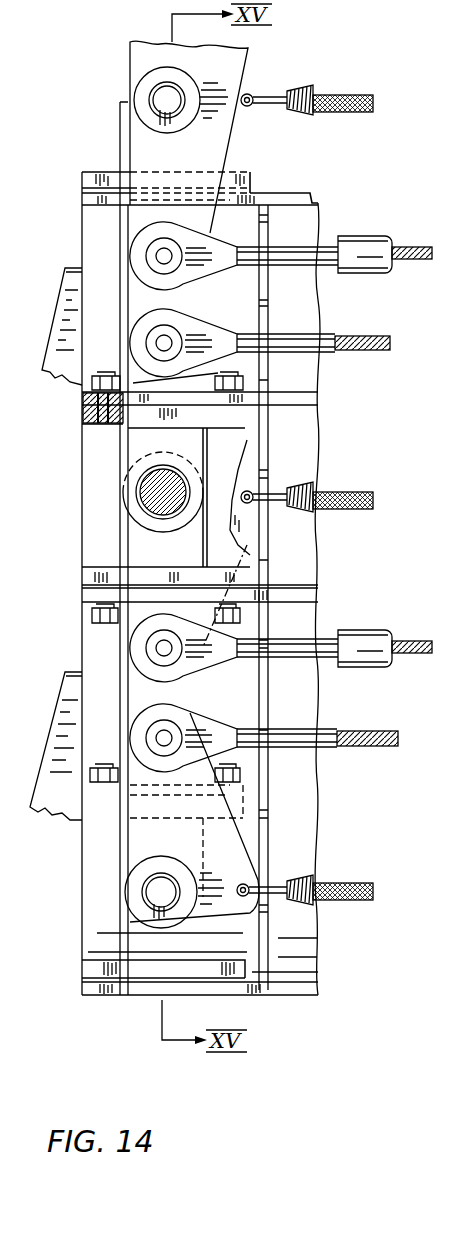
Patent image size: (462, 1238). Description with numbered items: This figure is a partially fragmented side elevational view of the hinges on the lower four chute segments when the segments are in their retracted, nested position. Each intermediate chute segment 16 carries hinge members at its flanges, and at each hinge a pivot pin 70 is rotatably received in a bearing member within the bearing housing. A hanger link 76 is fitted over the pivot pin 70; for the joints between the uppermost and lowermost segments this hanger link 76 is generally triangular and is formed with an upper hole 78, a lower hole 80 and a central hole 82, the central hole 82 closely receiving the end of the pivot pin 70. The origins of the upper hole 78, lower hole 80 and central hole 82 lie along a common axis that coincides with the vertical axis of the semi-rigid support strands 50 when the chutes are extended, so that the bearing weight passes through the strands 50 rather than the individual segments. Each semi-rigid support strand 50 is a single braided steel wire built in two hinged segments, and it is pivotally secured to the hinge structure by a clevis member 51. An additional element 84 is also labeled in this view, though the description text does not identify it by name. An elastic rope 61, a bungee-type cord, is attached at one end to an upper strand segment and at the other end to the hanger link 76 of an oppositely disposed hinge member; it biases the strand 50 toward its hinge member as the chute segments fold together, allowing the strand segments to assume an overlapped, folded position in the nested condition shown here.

The intermediate chute segment 16 is at (461, 938).
The semi-rigid support strand 50 is at (412, 242).
The clevis member 51 is at (317, 247).
The elastic rope 61 is at (335, 88).
The pivot pin 70 is at (160, 98).
The hanger link 76 is at (142, 150).
The upper hole 78 is at (162, 342).
The lower hole 80 is at (148, 650).
The central hole 82 is at (148, 487).
The clevis and nut 84 is at (160, 257).